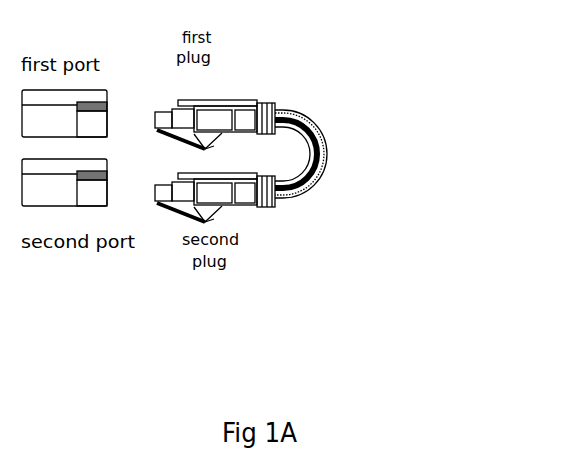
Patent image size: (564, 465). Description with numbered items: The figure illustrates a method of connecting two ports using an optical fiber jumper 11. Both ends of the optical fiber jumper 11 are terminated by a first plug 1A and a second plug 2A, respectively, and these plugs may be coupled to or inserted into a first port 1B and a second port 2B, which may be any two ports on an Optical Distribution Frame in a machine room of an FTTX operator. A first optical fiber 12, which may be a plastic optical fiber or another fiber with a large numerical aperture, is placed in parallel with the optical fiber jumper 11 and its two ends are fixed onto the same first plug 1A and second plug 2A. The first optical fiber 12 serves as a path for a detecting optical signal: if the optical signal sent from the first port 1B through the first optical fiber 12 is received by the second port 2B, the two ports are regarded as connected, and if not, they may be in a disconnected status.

The first plug 1A is at (215, 114).
The second plug 2A is at (215, 201).
The first port 1B is at (64, 113).
The second port 2B is at (64, 182).
The optical fiber jumper 11 is at (320, 118).
The first optical fiber 12 is at (408, 154).